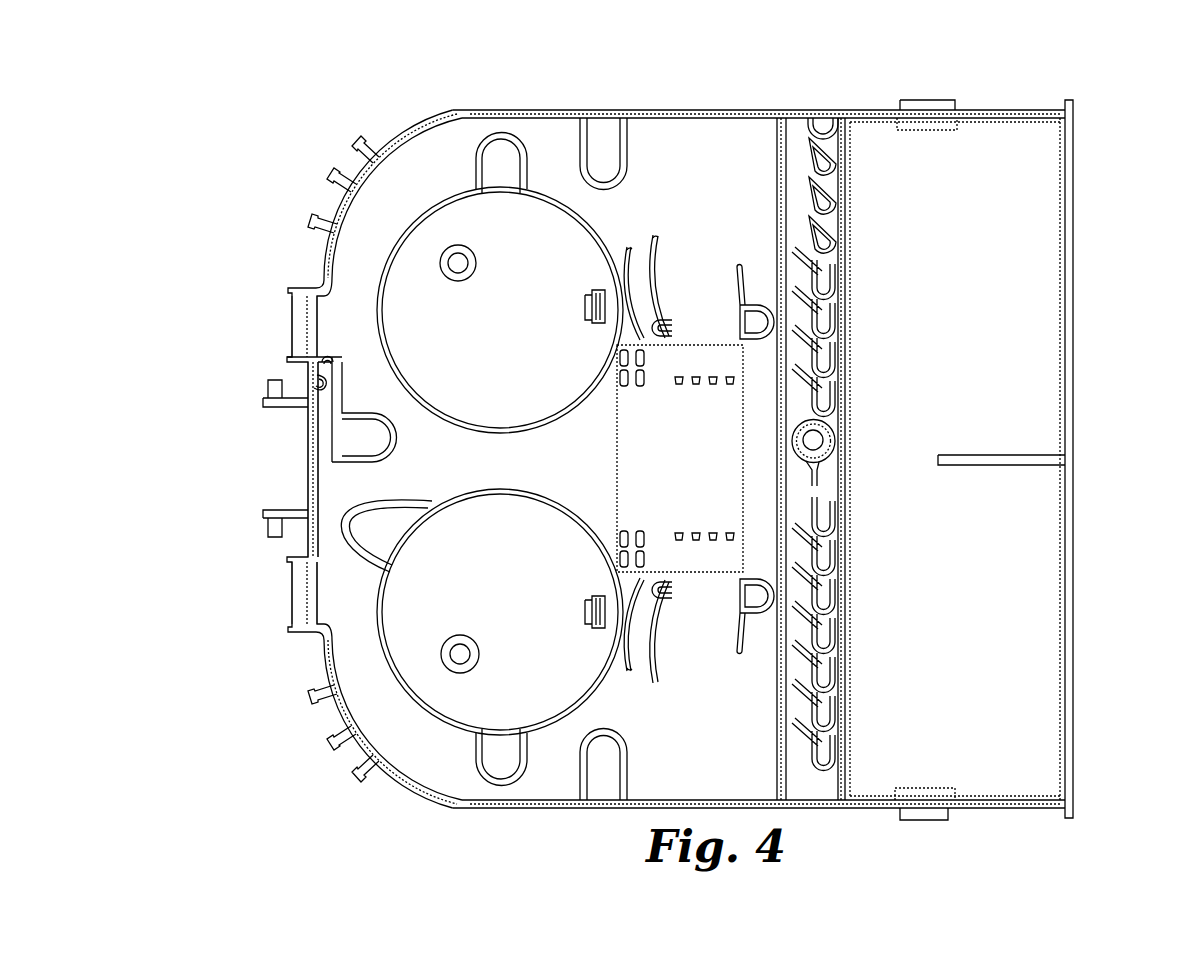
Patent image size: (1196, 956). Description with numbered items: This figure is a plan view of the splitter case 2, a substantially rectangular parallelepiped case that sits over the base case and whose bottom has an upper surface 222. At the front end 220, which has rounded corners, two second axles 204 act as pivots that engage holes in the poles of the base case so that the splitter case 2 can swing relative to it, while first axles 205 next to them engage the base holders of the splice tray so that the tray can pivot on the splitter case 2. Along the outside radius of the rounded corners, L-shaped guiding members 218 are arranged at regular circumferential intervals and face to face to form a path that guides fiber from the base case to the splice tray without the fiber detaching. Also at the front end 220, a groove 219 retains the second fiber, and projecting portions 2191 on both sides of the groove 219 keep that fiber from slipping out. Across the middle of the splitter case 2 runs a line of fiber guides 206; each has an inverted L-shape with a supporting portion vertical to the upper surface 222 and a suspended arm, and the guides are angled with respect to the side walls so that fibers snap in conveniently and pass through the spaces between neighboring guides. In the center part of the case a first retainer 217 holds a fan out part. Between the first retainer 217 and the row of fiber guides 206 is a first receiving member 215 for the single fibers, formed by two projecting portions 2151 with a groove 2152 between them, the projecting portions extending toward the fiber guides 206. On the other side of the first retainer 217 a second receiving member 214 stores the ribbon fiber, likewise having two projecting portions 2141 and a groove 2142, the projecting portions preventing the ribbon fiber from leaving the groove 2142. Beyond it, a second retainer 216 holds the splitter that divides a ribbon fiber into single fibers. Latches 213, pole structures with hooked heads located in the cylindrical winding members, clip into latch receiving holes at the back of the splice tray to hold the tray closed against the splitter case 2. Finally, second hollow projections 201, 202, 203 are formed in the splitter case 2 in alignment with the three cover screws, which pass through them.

The splitter case 2 is at (1095, 106).
The second hollow projection 201 is at (478, 263).
The second hollow projection 202 is at (462, 636).
The second hollow projection 203 is at (818, 440).
The second axle 204 is at (272, 388).
The first axle 205 is at (297, 322).
The fiber guide 206 is at (825, 522).
The latch 213 is at (584, 307).
The second receiving member 214 is at (657, 318).
The projecting portion 2141 is at (670, 592).
The groove 2142 is at (651, 658).
The first receiving member 215 is at (757, 292).
The projecting portion 2151 is at (665, 326).
The groove 2152 is at (758, 624).
The second retainer 216 is at (628, 393).
The first retainer 217 is at (720, 392).
The guiding member 218 is at (300, 703).
The groove 219 is at (326, 428).
The projecting portion 2191 is at (323, 358).
The front end 220 is at (308, 452).
The upper surface 222 is at (872, 133).